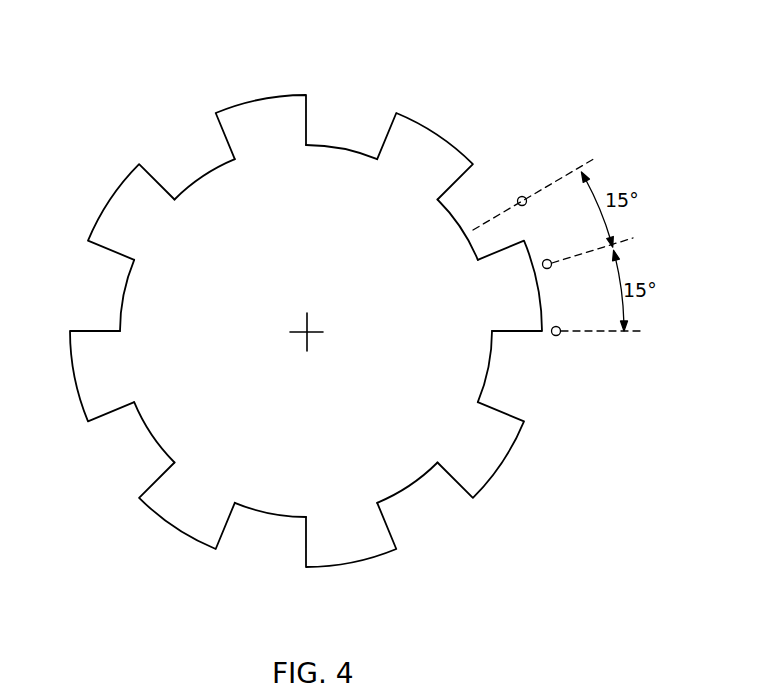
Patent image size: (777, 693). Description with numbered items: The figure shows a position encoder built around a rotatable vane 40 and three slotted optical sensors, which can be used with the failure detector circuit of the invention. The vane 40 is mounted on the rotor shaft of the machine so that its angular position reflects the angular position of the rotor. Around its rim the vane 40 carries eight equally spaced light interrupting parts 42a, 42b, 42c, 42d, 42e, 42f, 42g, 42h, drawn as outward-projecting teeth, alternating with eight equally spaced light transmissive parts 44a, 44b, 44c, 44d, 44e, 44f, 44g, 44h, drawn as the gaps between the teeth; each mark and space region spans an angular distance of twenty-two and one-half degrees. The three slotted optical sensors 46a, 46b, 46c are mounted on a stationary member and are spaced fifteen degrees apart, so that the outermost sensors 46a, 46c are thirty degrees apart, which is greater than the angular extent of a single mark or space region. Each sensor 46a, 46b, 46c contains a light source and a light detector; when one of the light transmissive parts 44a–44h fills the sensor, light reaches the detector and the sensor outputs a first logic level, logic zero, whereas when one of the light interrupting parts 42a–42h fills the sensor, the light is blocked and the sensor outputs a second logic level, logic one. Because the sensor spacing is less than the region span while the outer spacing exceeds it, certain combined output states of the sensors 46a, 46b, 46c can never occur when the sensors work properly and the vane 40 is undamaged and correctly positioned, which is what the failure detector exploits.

The vane 40 is at (165, 330).
The light interrupting part 42a is at (113, 196).
The light interrupting part 42b is at (257, 93).
The light interrupting part 42c is at (427, 125).
The light interrupting part 42d is at (512, 332).
The light interrupting part 42e is at (480, 445).
The light interrupting part 42f is at (355, 543).
The light interrupting part 42g is at (198, 520).
The light interrupting part 42h is at (98, 390).
The light transmissive part 44a is at (182, 165).
The light transmissive part 44b is at (335, 137).
The light transmissive part 44c is at (455, 213).
The light transmissive part 44d is at (496, 380).
The light transmissive part 44e is at (428, 492).
The light transmissive part 44f is at (273, 530).
The light transmissive part 44g is at (148, 445).
The light transmissive part 44h is at (118, 277).
The slotted optical sensor 46a is at (522, 196).
The slotted optical sensor 46b is at (547, 259).
The slotted optical sensor 46c is at (558, 336).